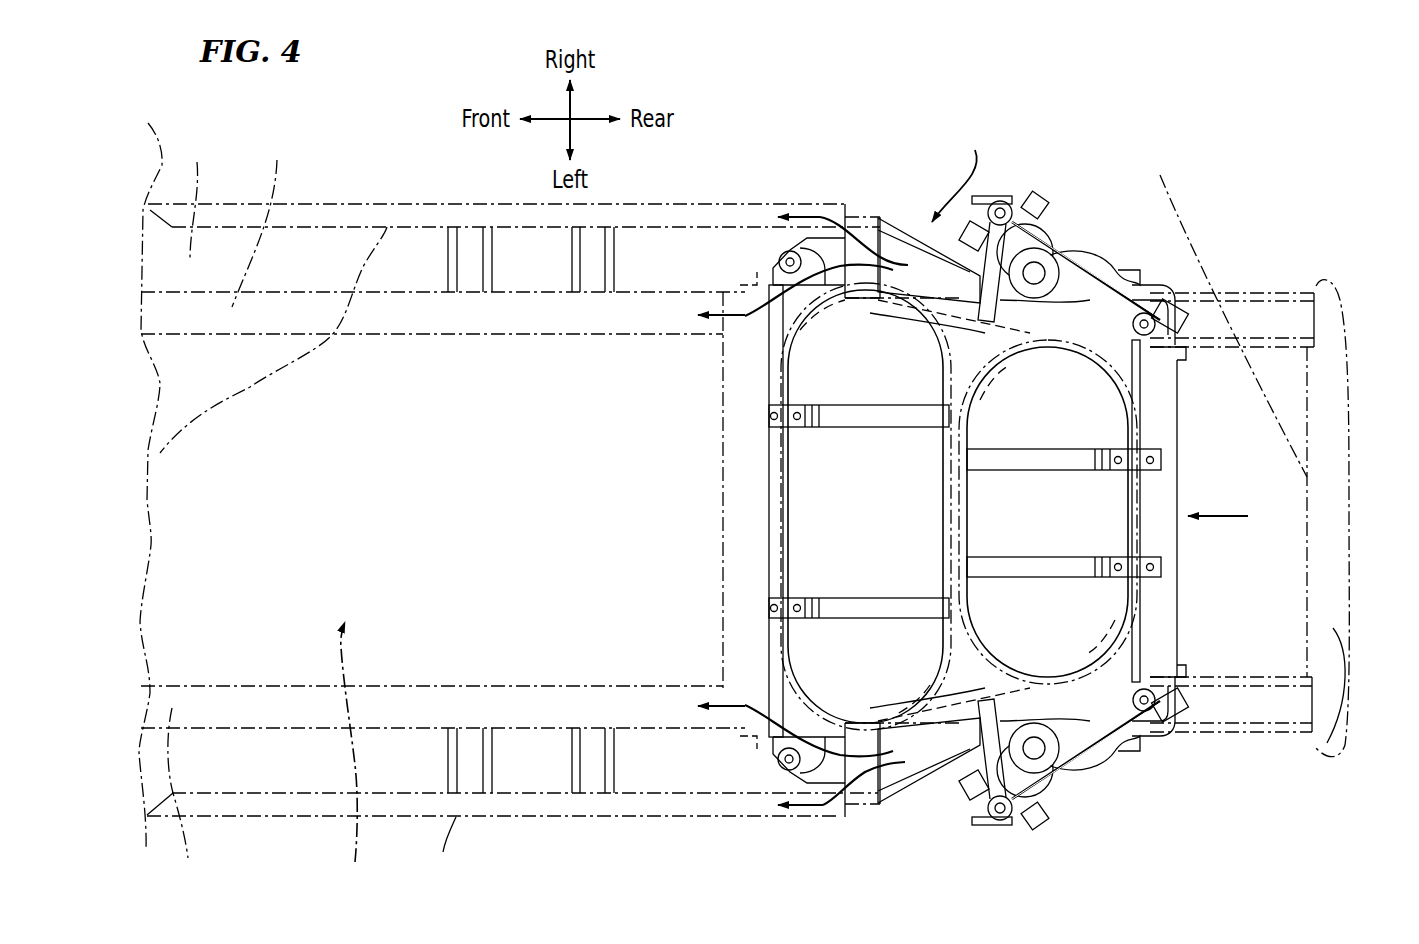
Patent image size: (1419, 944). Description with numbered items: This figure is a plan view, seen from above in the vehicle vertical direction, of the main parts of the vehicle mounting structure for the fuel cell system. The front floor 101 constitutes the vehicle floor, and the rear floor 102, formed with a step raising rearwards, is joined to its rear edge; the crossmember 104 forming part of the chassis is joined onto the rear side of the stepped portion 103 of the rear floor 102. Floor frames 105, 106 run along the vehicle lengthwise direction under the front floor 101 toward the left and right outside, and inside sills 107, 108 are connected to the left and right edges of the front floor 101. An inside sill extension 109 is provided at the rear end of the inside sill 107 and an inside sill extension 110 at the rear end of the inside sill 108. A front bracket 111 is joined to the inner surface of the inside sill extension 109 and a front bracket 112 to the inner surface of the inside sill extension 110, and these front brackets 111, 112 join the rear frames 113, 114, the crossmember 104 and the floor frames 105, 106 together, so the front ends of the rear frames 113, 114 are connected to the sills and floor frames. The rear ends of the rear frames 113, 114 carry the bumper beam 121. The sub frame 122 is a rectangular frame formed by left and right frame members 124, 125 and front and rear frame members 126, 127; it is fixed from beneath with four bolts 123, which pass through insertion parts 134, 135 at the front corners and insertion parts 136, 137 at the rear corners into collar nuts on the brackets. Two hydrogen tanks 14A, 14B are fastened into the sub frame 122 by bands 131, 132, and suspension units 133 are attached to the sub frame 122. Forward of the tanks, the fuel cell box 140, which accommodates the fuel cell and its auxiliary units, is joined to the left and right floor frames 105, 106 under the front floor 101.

The front floor 101 is at (180, 486).
The rear floor 102 is at (1270, 407).
The stepped portion 103 is at (764, 483).
The crossmember 104 is at (770, 350).
The floor frame 105 is at (187, 800).
The floor frame 106 is at (273, 291).
The inside sill 107 is at (444, 852).
The inside sill 108 is at (445, 204).
The inside sill extension 109 is at (862, 798).
The inside sill extension 110 is at (897, 225).
The front bracket 111 is at (750, 780).
The front bracket 112 is at (775, 249).
The rear frame 113 is at (1228, 735).
The rear frame 114 is at (1240, 290).
The bumper beam 121 is at (1351, 706).
The sub frame 122 is at (960, 168).
The bolt 123 is at (762, 180).
The left frame member 124 is at (917, 760).
The right frame member 125 is at (917, 273).
The front frame member 126 is at (778, 520).
The rear frame member 127 is at (1165, 488).
The band 131 is at (866, 372).
The band 132 is at (1062, 423).
The suspension unit 133 is at (1088, 152).
The insertion part 134 is at (785, 772).
The insertion part 135 is at (817, 273).
The insertion part 136 is at (1176, 665).
The insertion part 137 is at (1165, 272).
The fuel cell box 140 is at (349, 766).
The hydrogen tank 14A is at (866, 506).
The hydrogen tank 14B is at (1048, 512).